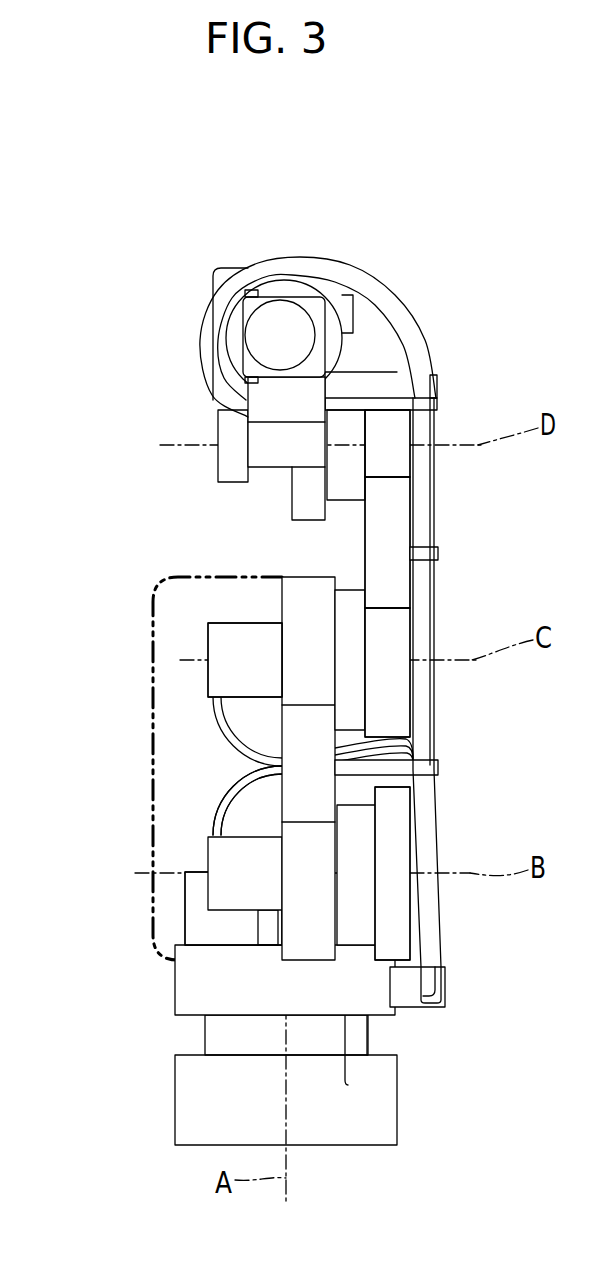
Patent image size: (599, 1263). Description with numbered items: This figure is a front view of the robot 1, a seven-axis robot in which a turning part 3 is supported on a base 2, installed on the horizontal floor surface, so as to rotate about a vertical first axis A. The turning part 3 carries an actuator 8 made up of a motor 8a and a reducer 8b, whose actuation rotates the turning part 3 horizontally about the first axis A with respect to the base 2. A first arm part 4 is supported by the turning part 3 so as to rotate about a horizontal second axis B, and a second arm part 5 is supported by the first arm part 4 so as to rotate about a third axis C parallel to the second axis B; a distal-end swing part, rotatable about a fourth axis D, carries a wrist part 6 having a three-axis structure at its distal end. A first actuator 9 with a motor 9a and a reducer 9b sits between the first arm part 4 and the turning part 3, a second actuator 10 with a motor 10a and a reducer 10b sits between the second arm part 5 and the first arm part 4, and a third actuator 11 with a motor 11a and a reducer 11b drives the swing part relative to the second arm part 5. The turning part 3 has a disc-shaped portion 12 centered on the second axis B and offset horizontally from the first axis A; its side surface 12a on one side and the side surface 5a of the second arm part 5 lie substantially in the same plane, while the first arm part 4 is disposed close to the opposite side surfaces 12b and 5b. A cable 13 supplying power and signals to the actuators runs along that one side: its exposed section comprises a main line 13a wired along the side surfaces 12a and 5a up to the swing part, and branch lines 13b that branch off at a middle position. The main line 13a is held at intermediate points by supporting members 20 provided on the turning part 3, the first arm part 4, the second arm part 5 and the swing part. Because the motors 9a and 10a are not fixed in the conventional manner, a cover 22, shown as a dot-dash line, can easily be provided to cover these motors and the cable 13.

The robot 1 is at (55, 232).
The base 2 is at (397, 1105).
The turning part 3 is at (165, 989).
The first arm part 4 is at (270, 720).
The second arm part 5 is at (425, 583).
The side surface 5a is at (412, 498).
The side surface 5b is at (366, 546).
The wrist part 6 is at (265, 322).
The actuator 8 is at (175, 914).
The motor 8a is at (197, 872).
The reducer 8b is at (205, 1040).
The first actuator 9 is at (196, 846).
The motor 9a is at (218, 800).
The reducer 9b is at (377, 820).
The second actuator 10 is at (196, 633).
The motor 10a is at (220, 622).
The reducer 10b is at (366, 694).
The third actuator 11 is at (205, 428).
The motor 11a is at (218, 468).
The reducer 11b is at (365, 428).
The disc-shaped portion 12 is at (425, 915).
The side surface 12a is at (412, 936).
The side surface 12b is at (348, 1017).
The cable 13 is at (300, 247).
The main line 13a is at (435, 463).
The branch lines 13b is at (228, 748).
The supporting members 20 is at (372, 382).
The cover 22 is at (153, 660).